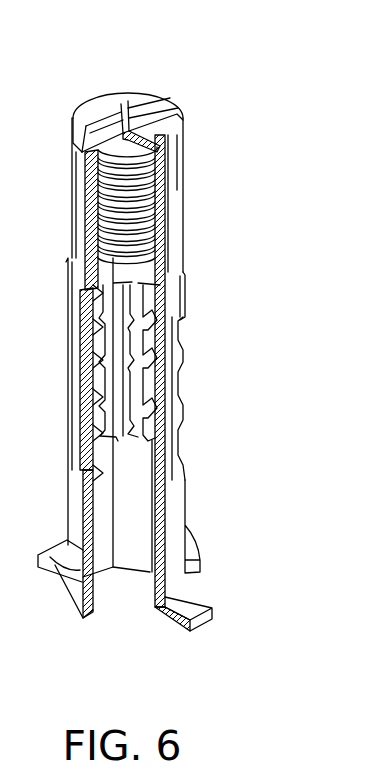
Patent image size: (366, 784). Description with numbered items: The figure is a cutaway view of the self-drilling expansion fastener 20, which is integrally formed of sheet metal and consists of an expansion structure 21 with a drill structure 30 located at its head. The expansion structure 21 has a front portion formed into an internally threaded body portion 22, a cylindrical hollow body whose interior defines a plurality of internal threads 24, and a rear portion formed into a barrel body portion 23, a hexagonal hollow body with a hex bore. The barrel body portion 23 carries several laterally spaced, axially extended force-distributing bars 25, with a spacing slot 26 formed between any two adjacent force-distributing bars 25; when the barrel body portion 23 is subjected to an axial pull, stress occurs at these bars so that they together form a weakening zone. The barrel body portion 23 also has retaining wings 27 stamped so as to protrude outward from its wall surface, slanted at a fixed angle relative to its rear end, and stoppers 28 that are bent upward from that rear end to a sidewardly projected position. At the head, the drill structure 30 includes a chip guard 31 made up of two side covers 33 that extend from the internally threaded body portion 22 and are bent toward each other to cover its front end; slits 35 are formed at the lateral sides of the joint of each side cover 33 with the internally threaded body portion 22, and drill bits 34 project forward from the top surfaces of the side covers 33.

The self-drilling expansion fastener 20 is at (277, 27).
The expansion structure 21 is at (211, 189).
The internally threaded body portion 22 is at (203, 249).
The barrel body portion 23 is at (205, 304).
The internal threads 24 is at (108, 200).
The force-distributing bars 25 is at (97, 350).
The spacing slot 26 is at (112, 408).
The retaining wing 27 is at (198, 562).
The stopper 28 is at (50, 553).
The drill structure 30 is at (208, 60).
The chip guard 31 is at (77, 87).
The side covers 33 is at (168, 123).
The drill bits 34 is at (146, 108).
The slits 35 is at (178, 173).